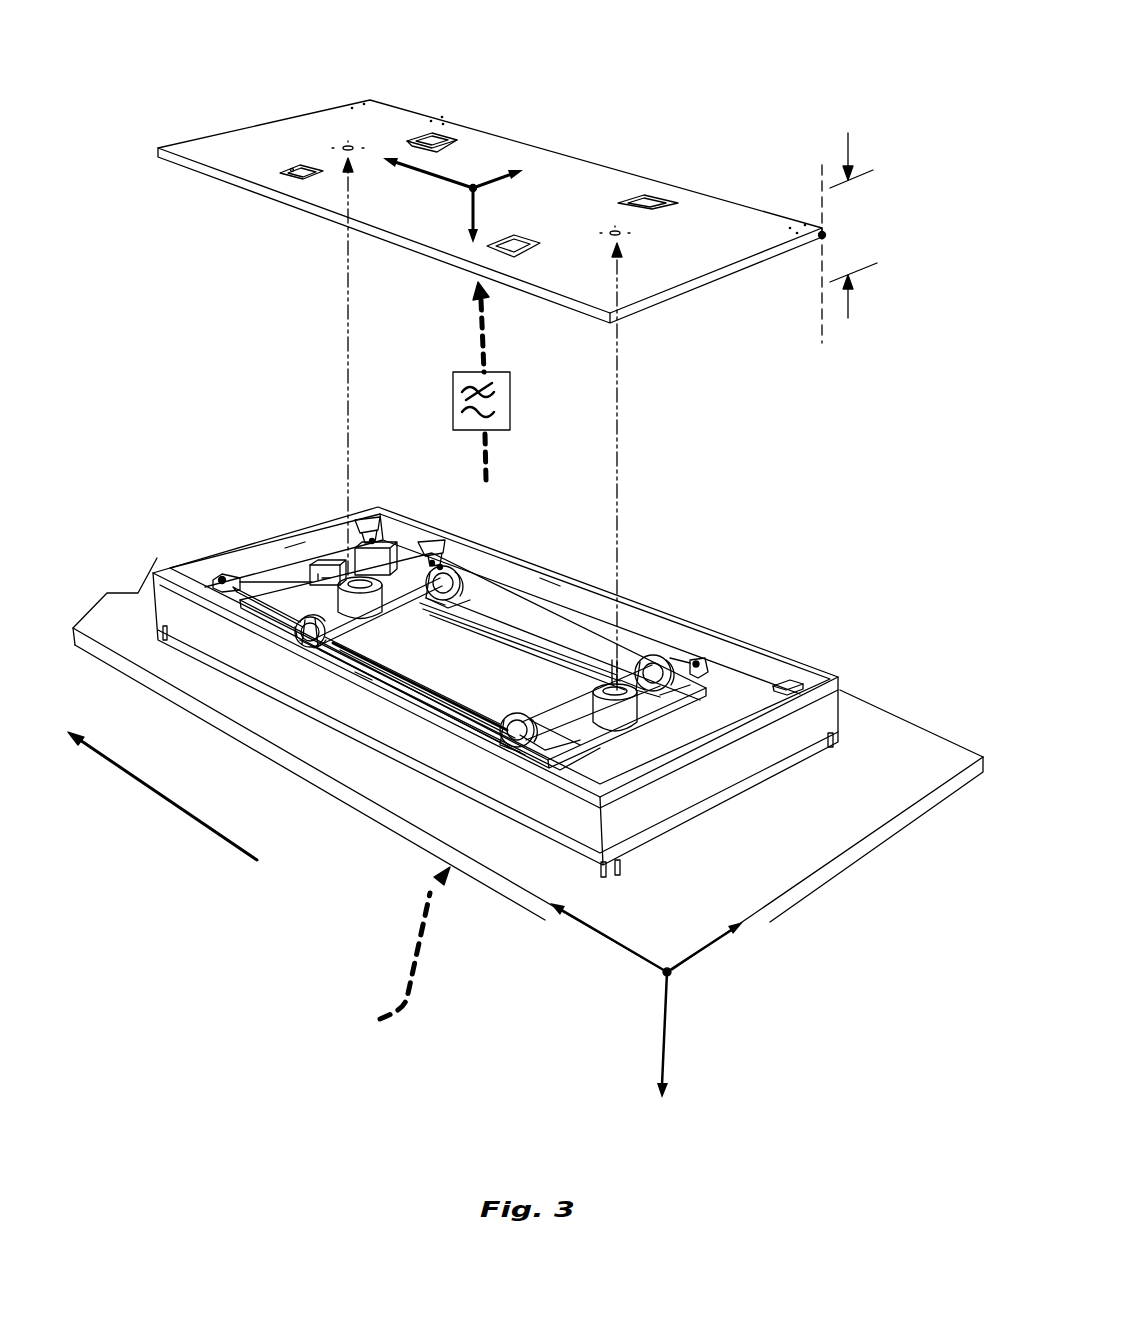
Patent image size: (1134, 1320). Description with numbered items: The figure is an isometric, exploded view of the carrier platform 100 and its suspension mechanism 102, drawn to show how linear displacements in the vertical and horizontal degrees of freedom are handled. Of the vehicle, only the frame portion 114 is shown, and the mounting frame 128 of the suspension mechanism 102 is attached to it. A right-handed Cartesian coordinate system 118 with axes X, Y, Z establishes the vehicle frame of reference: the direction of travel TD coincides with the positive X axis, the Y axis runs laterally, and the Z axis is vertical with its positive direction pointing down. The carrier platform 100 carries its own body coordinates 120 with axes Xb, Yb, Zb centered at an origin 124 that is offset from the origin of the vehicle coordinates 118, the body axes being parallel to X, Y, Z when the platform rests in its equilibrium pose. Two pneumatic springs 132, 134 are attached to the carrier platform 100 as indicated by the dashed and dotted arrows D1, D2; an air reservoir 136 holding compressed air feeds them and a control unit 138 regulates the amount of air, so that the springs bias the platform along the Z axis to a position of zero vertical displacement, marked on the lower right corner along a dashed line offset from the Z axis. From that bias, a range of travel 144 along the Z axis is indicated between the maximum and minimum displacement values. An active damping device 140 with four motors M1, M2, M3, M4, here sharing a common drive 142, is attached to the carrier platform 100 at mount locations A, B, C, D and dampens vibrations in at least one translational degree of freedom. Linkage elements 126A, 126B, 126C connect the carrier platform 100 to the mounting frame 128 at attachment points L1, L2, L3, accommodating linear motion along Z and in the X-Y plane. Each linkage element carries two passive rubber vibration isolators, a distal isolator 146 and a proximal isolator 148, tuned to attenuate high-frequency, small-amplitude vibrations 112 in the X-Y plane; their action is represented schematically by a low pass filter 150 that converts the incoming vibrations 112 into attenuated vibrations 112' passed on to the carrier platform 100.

The carrier platform 100 is at (226, 138).
The suspension mechanism 102 is at (528, 711).
The vibrations 112 is at (426, 956).
The attenuated vibrations 112' is at (438, 381).
The frame portion 114 is at (122, 600).
The Cartesian coordinate system 118 is at (710, 1014).
The body coordinates 120 is at (480, 153).
The origin 124 is at (482, 190).
The linkage element 126A is at (797, 678).
The linkage element 126B is at (550, 604).
The linkage element 126C is at (292, 556).
The mounting frame 128 is at (176, 571).
The pneumatic spring 132 is at (370, 605).
The pneumatic spring 134 is at (598, 688).
The air reservoir 136 is at (450, 700).
The control unit 138 is at (262, 618).
The active damping device 140 is at (452, 630).
The common drive 142 is at (384, 545).
The range of travel 144 is at (852, 141).
The vibration isolator 146 is at (233, 576).
The vibration isolator 148 is at (358, 540).
The low pass filter 150 is at (452, 399).
The mount location A is at (528, 258).
The mount location B is at (628, 200).
The mount location C is at (430, 136).
The mount location D is at (290, 166).
The dashed and dotted arrow D1 is at (622, 418).
The dashed and dotted arrow D2 is at (346, 341).
The attachment point L1 is at (792, 198).
The attachment point L2 is at (433, 103).
The attachment point L3 is at (360, 86).
The motor M1 is at (532, 748).
The motor M2 is at (653, 655).
The motor M3 is at (455, 570).
The motor M4 is at (320, 648).
The direction of travel TD is at (167, 800).
The X-axis X is at (593, 933).
The Y-axis Y is at (713, 948).
The Z-axis Z is at (668, 1005).
The body X-axis Xb is at (418, 176).
The body Y-axis Yb is at (476, 185).
The body Z-axis Zb is at (478, 205).